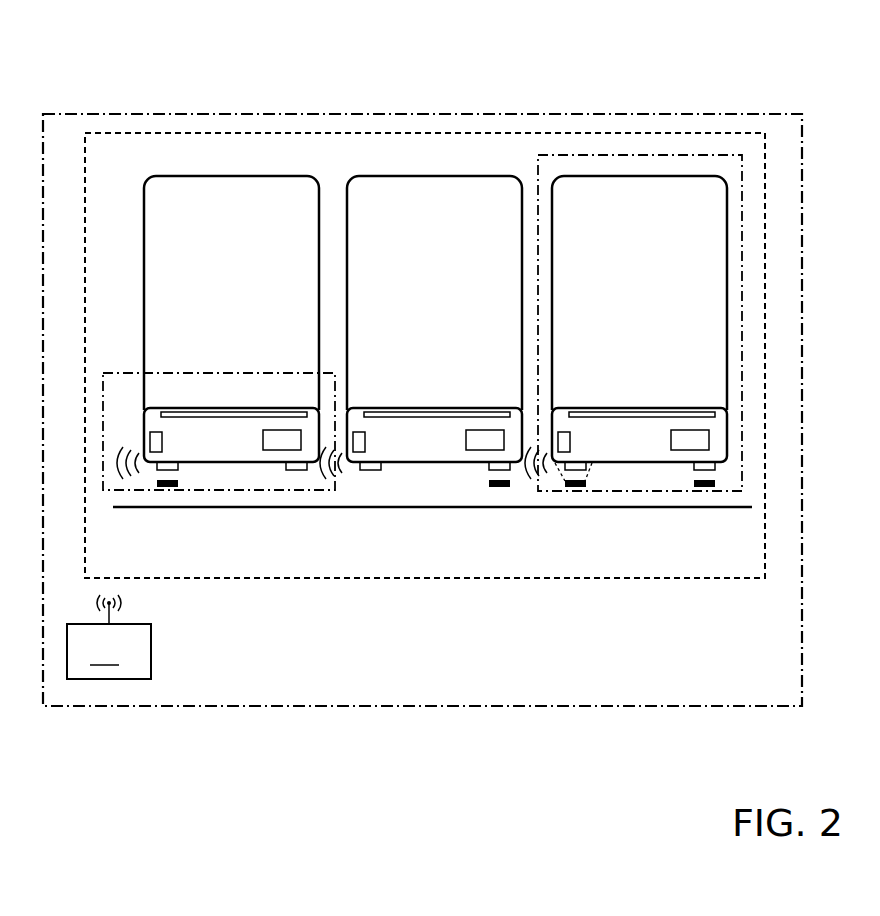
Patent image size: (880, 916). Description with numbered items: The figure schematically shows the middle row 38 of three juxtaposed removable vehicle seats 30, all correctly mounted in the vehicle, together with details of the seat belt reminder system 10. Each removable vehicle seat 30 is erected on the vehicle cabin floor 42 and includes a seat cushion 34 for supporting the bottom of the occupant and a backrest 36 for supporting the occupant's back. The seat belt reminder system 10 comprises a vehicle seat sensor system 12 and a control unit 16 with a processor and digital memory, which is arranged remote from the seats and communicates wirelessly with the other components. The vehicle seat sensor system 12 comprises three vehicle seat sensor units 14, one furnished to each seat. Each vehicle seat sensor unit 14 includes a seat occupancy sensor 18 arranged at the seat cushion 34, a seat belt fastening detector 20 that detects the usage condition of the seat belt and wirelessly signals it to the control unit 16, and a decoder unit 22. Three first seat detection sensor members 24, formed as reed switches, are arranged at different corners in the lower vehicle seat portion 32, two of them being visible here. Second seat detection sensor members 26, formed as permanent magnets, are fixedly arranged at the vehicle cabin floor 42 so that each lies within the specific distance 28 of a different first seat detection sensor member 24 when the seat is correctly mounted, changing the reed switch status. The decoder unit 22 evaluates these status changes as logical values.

The seat belt reminder system 10 is at (240, 706).
The vehicle seat sensor system 12 is at (432, 578).
The vehicle seat sensor unit 14 is at (237, 490).
The control unit 16 is at (109, 637).
The seat occupancy sensor 18 is at (620, 414).
The seat belt fastening detector 20 is at (163, 440).
The decoder unit 22 is at (670, 437).
The first seat detection sensor member 24 is at (372, 470).
The second seat detection sensor member 26 is at (500, 487).
The specific distance 28 is at (588, 472).
The removable vehicle seat 30 is at (572, 155).
The lower vehicle seat portion 32 is at (448, 398).
The seat cushion 34 is at (400, 450).
The backrest 36 is at (143, 297).
The middle row 38 is at (697, 73).
The vehicle cabin floor 42 is at (180, 507).